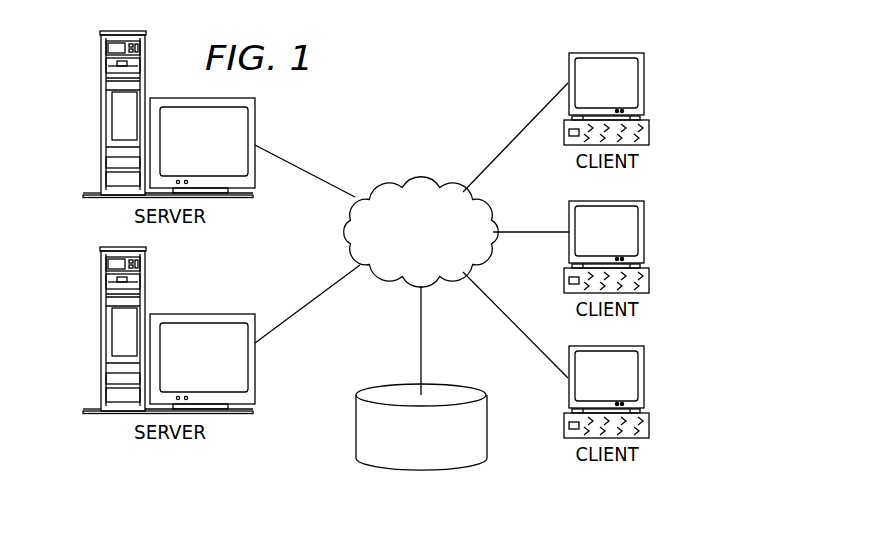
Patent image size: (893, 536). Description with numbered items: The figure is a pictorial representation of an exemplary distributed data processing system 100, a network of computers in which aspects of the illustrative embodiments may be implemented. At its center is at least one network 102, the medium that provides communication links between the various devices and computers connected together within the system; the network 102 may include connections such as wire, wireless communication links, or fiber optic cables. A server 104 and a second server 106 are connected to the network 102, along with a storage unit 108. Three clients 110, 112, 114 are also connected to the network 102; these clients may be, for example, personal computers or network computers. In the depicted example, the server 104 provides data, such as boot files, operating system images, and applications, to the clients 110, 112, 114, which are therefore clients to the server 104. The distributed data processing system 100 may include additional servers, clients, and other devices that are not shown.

The distributed data processing system 100 is at (750, 162).
The network 102 is at (392, 180).
The server 104 is at (101, 113).
The server 106 is at (101, 329).
The storage unit 108 is at (403, 471).
The client 110 is at (645, 83).
The client 112 is at (645, 232).
The client 114 is at (645, 378).